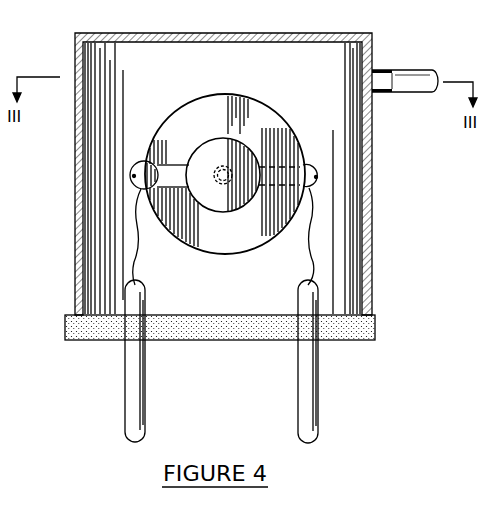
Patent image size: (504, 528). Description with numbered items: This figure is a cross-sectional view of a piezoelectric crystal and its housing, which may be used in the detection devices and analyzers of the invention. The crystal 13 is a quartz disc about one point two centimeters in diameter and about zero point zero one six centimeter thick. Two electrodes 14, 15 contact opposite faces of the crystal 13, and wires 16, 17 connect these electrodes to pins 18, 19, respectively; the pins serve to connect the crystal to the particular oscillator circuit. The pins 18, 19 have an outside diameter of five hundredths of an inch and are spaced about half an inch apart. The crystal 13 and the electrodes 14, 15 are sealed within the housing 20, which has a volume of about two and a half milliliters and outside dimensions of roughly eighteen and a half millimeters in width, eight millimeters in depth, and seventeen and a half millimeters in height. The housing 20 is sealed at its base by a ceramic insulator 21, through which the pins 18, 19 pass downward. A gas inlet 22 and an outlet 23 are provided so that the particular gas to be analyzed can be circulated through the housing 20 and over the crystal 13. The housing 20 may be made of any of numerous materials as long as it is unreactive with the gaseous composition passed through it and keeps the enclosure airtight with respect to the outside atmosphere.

The crystal 13 is at (268, 112).
The electrode 14 is at (141, 162).
The electrode 15 is at (310, 164).
The wire 16 is at (139, 271).
The wire 17 is at (305, 267).
The pin 18 is at (142, 407).
The pin 19 is at (312, 409).
The housing 20 is at (272, 33).
The ceramic insulator 21 is at (237, 341).
The gas inlet 22 is at (408, 88).
The outlet 23 is at (214, 168).